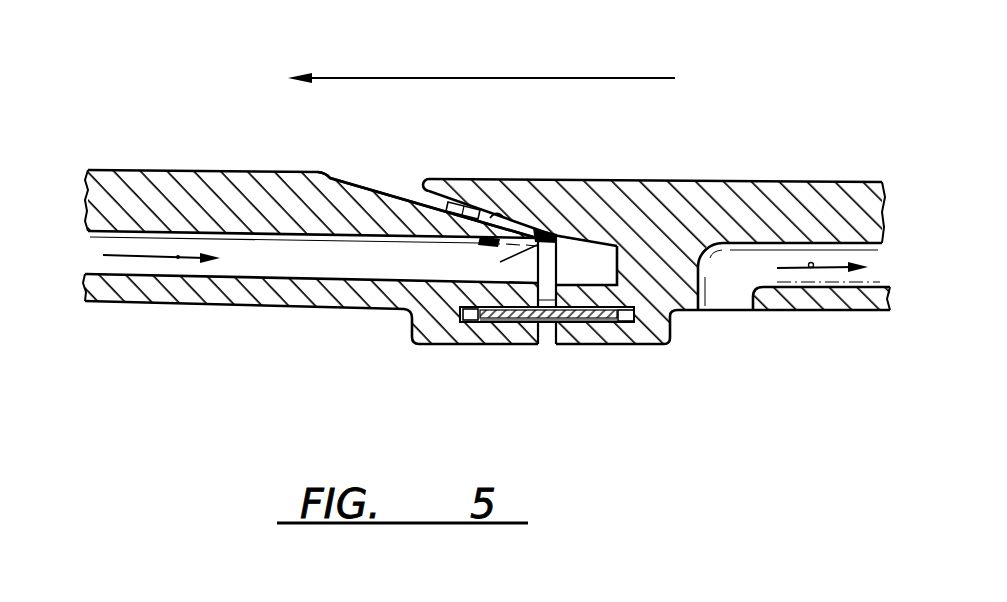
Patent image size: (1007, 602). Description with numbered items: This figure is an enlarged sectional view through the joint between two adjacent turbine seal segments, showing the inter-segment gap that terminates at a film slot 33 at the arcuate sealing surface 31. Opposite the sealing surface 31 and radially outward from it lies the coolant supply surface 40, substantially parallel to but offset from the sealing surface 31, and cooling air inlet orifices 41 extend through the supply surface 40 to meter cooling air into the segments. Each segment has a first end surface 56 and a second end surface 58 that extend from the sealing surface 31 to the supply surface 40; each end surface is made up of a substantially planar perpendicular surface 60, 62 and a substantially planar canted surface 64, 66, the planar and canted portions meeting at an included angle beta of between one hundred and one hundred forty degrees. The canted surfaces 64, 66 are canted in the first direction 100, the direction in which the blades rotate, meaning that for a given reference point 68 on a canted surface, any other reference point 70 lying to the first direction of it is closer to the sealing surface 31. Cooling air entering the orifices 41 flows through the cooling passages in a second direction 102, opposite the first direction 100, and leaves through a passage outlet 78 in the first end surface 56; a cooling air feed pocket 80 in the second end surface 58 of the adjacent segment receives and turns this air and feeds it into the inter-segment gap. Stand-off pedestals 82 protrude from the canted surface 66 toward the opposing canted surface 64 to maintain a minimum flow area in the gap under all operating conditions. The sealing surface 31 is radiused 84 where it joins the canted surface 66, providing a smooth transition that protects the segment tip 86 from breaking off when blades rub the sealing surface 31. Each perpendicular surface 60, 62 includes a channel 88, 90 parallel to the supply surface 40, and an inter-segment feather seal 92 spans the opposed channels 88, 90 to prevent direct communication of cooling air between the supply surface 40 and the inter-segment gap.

The sealing surface 31 is at (135, 172).
The film slot 33 is at (383, 187).
The coolant supply surface 40 is at (440, 262).
The cooling air inlet orifices 41 is at (735, 318).
The first end surface 56 is at (450, 265).
The second end surface 58 is at (513, 216).
The perpendicular surface 60 is at (549, 290).
The perpendicular surface 62 is at (590, 265).
The canted surface 64 is at (333, 180).
The canted surface 66 is at (535, 235).
The reference point 68 is at (415, 270).
The reference point 70 is at (380, 234).
The passage outlet 78 is at (512, 295).
The cooling air feed pocket 80 is at (645, 225).
The stand-off pedestal 82 is at (458, 200).
The radius 84 is at (375, 186).
The segment tip 86 is at (470, 168).
The channel 88 is at (465, 315).
The channel 90 is at (640, 344).
The inter-segment feather seal 92 is at (633, 322).
The first direction 100 is at (517, 80).
The second direction 102 is at (178, 258).